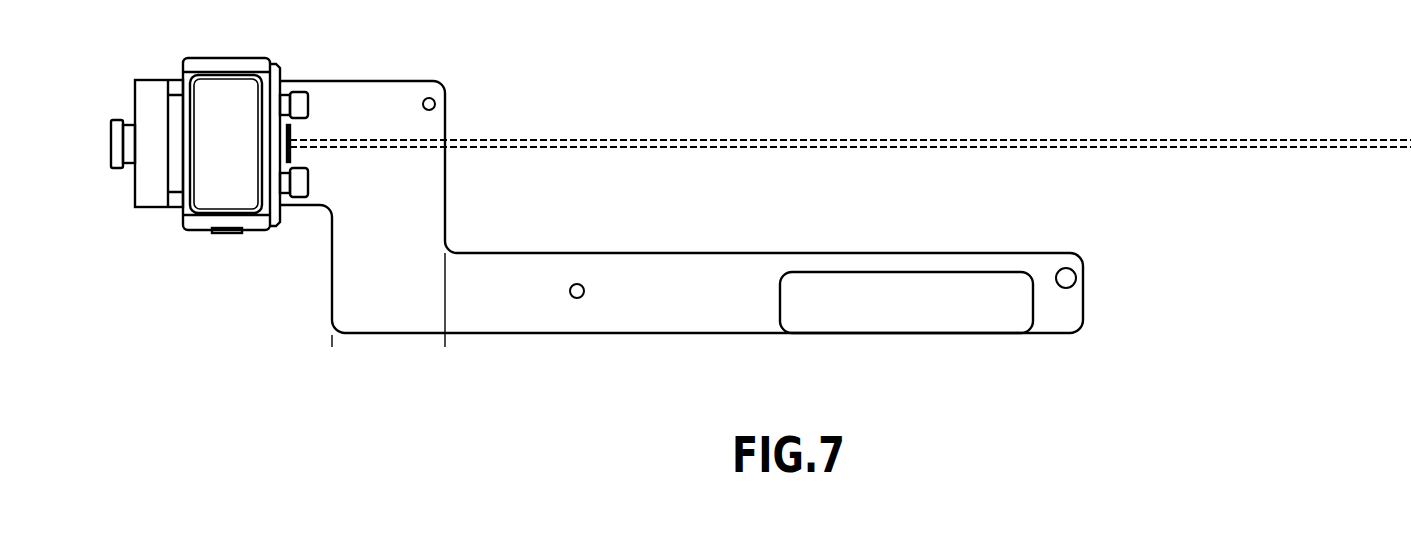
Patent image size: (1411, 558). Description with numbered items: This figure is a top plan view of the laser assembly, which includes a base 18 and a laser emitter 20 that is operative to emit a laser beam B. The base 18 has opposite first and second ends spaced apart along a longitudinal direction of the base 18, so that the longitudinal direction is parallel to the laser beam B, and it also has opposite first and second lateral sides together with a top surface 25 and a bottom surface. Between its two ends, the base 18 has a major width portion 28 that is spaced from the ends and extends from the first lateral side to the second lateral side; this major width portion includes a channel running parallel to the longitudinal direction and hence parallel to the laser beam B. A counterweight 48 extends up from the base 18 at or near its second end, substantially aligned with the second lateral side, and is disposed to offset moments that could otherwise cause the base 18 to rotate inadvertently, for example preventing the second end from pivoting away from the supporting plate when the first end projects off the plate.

The base 18 is at (668, 254).
The laser emitter 20 is at (243, 63).
The top surface 25 is at (525, 266).
The major width portion 28 is at (332, 350).
The counterweight 48 is at (955, 290).
The laser beam B is at (1198, 145).